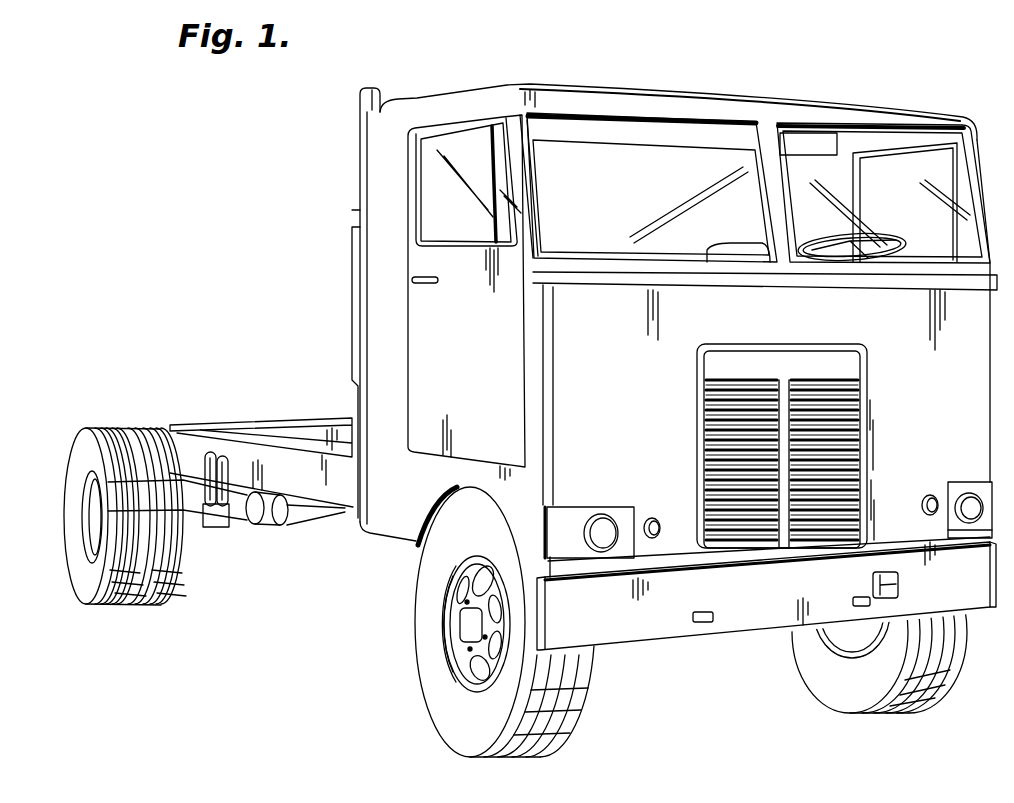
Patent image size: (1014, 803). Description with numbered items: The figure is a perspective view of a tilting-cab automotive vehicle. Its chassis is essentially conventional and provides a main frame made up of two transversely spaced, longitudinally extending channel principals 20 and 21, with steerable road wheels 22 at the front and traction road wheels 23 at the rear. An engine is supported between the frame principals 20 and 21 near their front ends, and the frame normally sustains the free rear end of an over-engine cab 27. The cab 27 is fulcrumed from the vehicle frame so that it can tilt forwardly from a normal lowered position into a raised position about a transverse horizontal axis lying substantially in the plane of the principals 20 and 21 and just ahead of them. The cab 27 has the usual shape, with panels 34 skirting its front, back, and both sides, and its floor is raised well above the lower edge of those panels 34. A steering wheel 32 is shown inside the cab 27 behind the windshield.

The channel principal 20 is at (345, 428).
The channel principal 21 is at (336, 502).
The steerable road wheels 22 is at (424, 637).
The traction road wheels 23 is at (172, 569).
The cab 27 is at (516, 85).
The steering wheel 32 is at (823, 246).
The panels 34 is at (405, 533).